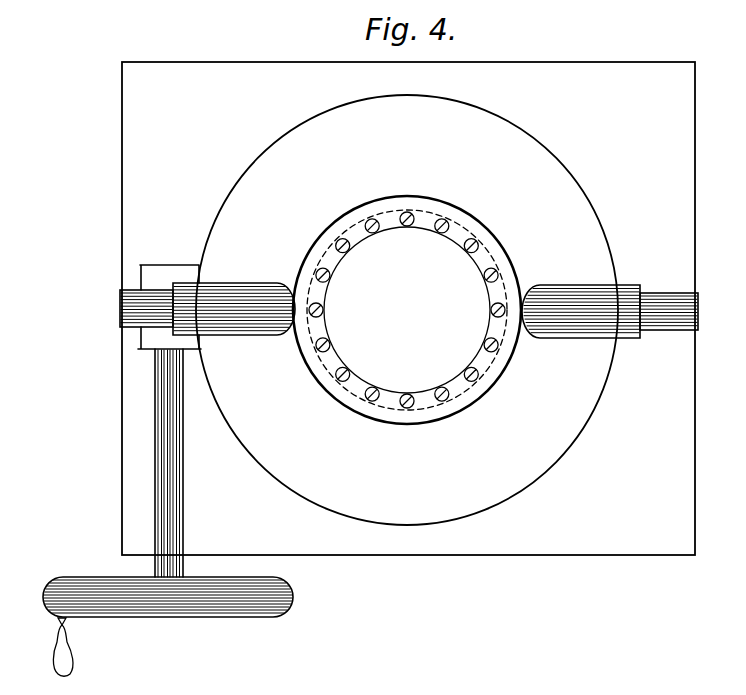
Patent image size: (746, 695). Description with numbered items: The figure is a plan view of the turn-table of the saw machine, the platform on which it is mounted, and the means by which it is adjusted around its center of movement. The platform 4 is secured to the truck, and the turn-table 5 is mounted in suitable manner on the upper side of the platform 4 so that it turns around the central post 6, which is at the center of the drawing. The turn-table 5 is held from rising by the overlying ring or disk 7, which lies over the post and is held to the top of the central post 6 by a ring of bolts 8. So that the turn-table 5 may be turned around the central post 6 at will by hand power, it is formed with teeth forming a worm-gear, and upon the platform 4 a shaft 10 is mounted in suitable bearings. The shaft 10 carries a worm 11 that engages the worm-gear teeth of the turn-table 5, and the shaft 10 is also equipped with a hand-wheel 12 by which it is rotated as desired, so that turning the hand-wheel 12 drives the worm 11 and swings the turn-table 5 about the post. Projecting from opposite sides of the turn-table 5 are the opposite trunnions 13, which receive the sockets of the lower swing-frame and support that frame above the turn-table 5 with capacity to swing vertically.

The platform 4 is at (408, 308).
The turn-table 5 is at (407, 310).
The central post 6 is at (427, 212).
The overlying ring or disk 7 is at (447, 412).
The bolts 8 is at (477, 377).
The shaft 10 is at (184, 486).
The worm 11 is at (160, 275).
The hand-wheel 12 is at (293, 603).
The trunnions 13 is at (130, 303).